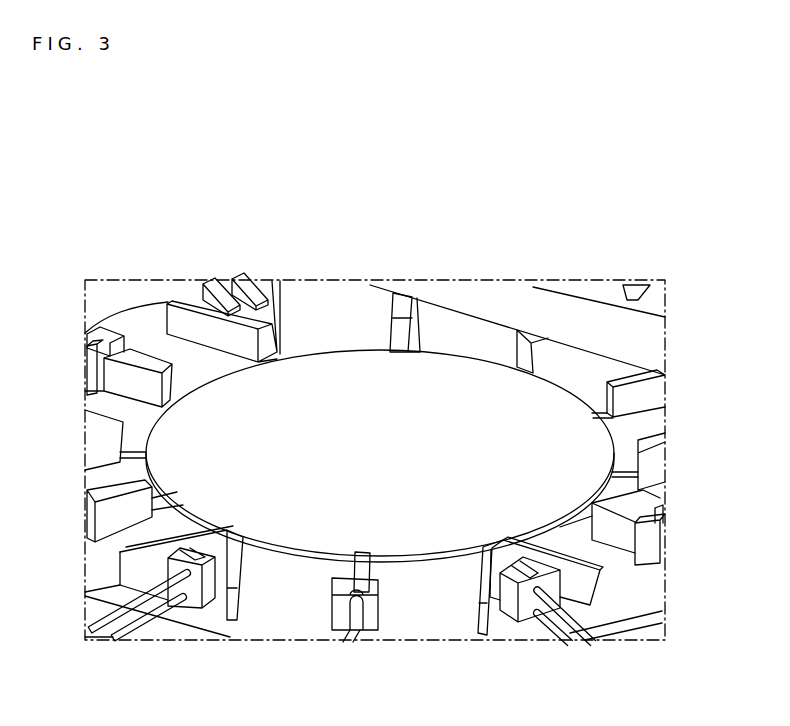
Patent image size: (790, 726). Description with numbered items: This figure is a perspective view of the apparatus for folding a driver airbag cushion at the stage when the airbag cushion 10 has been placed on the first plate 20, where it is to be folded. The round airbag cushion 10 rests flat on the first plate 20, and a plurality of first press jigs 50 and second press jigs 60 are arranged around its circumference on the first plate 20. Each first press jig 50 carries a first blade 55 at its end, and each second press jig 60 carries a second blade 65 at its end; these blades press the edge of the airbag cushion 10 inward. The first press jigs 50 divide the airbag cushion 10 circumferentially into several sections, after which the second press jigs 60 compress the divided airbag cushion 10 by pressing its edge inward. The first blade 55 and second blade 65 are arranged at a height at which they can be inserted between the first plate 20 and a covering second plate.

The airbag cushion 10 is at (550, 413).
The first plate 20 is at (433, 620).
The first press jig 50 is at (120, 617).
The first blade 55 is at (233, 620).
The second press jig 60 is at (662, 523).
The second blade 65 is at (610, 520).